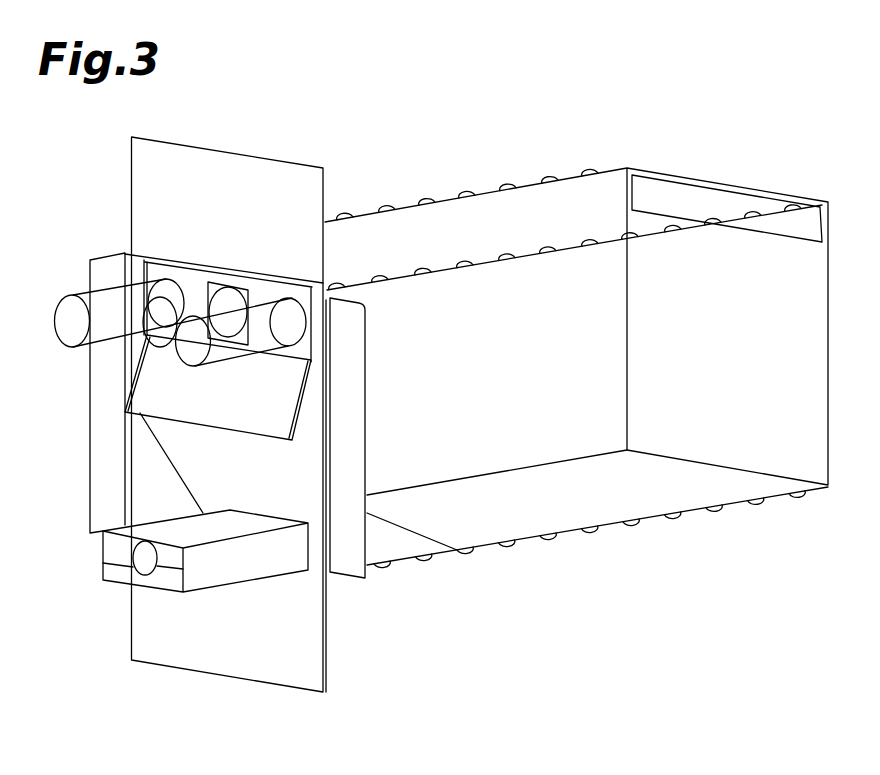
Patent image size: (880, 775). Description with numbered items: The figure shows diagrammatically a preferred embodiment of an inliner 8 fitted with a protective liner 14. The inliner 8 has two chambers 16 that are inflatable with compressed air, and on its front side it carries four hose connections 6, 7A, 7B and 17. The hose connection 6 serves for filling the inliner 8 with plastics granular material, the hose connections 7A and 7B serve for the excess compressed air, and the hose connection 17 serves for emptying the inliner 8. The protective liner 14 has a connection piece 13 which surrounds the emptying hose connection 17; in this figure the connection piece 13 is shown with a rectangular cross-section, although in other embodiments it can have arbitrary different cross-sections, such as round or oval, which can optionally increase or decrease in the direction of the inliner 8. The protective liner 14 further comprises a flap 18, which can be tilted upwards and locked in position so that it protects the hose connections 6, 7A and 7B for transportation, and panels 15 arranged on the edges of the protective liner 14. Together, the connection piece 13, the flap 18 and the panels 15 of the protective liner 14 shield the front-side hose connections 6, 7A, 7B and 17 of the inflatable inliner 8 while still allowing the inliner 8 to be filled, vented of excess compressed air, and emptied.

The hose connection 6 is at (200, 293).
The hose connection 7A is at (105, 297).
The hose connection 7B is at (233, 320).
The inliner 8 is at (572, 410).
The connection piece 13 is at (203, 565).
The protective liner 14 is at (254, 230).
The panels 15 is at (160, 213).
The chambers 16 is at (390, 545).
The hose connection 17 is at (137, 572).
The flap 18 is at (158, 400).